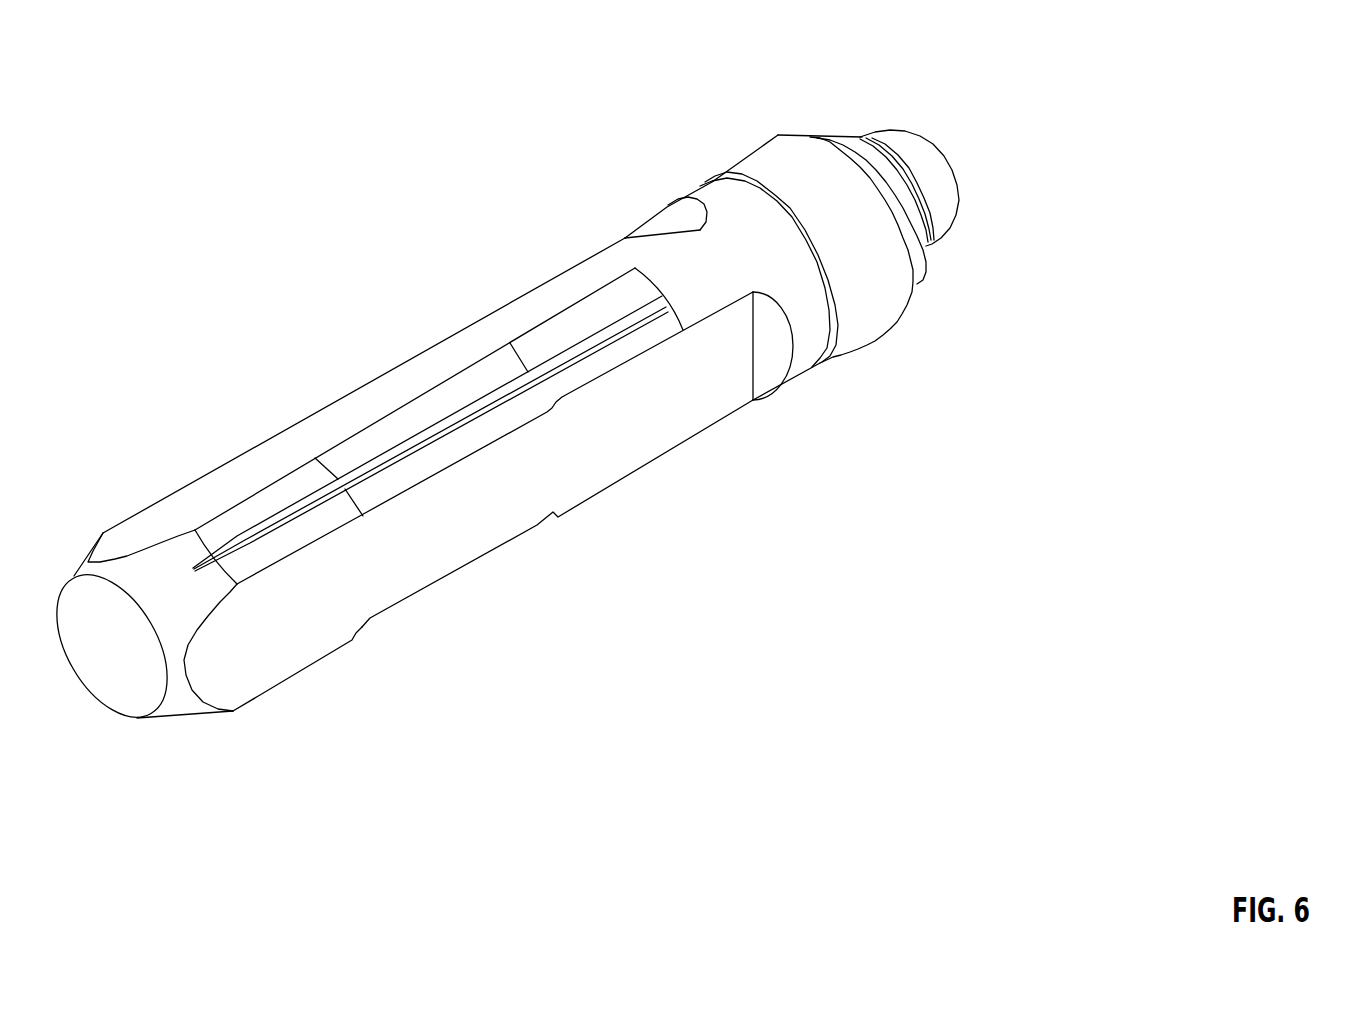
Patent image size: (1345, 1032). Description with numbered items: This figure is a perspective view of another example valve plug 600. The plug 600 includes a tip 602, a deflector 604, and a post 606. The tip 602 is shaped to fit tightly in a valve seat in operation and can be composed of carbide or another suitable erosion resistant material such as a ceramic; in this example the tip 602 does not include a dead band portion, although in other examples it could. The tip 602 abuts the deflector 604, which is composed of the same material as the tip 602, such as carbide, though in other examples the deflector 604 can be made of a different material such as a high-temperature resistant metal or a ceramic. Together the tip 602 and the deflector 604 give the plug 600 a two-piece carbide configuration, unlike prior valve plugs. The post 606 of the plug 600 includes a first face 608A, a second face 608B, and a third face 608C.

The plug 600 is at (897, 41).
The tip 602 is at (922, 138).
The deflector 604 is at (915, 277).
The post 606 is at (373, 380).
The first face 608A is at (183, 490).
The second face 608B is at (682, 436).
The third face 608C is at (446, 670).